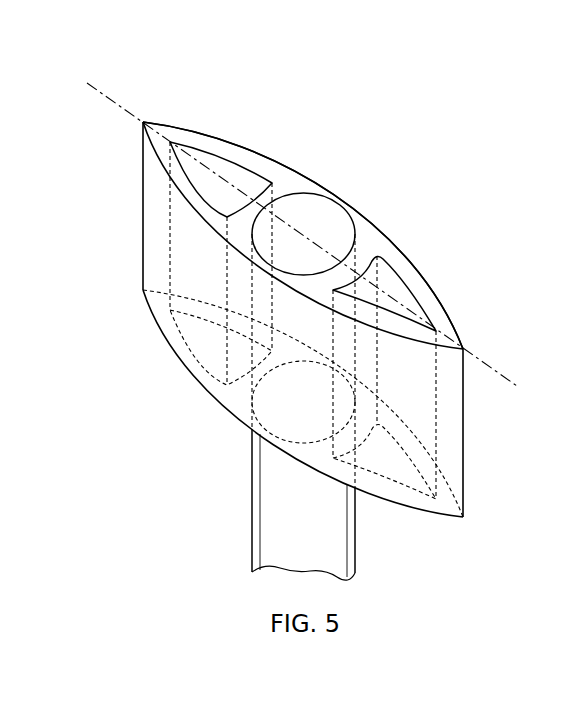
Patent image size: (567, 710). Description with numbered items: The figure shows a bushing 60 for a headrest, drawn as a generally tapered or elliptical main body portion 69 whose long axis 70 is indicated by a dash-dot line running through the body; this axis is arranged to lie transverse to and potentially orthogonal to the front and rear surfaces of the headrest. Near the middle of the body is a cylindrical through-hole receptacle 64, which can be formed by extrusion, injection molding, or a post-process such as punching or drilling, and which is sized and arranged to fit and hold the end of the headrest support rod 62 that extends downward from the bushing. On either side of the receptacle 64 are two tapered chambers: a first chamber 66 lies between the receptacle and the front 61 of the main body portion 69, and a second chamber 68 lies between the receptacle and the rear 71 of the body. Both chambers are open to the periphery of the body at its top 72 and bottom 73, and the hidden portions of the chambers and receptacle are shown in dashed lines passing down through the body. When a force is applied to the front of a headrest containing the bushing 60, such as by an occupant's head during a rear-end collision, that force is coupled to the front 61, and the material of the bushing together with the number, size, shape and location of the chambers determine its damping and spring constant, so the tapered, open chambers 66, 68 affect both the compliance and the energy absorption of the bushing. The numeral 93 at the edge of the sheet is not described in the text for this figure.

The bushing 60 is at (297, 184).
The front of the main body portion 61 is at (464, 439).
The headrest support rod 62 is at (262, 550).
The cylindrical through-hole receptacle 64 is at (327, 218).
The first chamber 66 is at (403, 285).
The second chamber 68 is at (228, 166).
The main body portion 69 is at (176, 369).
The long axis 70 is at (104, 89).
The rear of the main body portion 71 is at (143, 215).
The top of the body 72 is at (380, 226).
The bottom of the body 73 is at (218, 402).
The partially visible numeral (adjacent figure) 93 is at (560, 326).